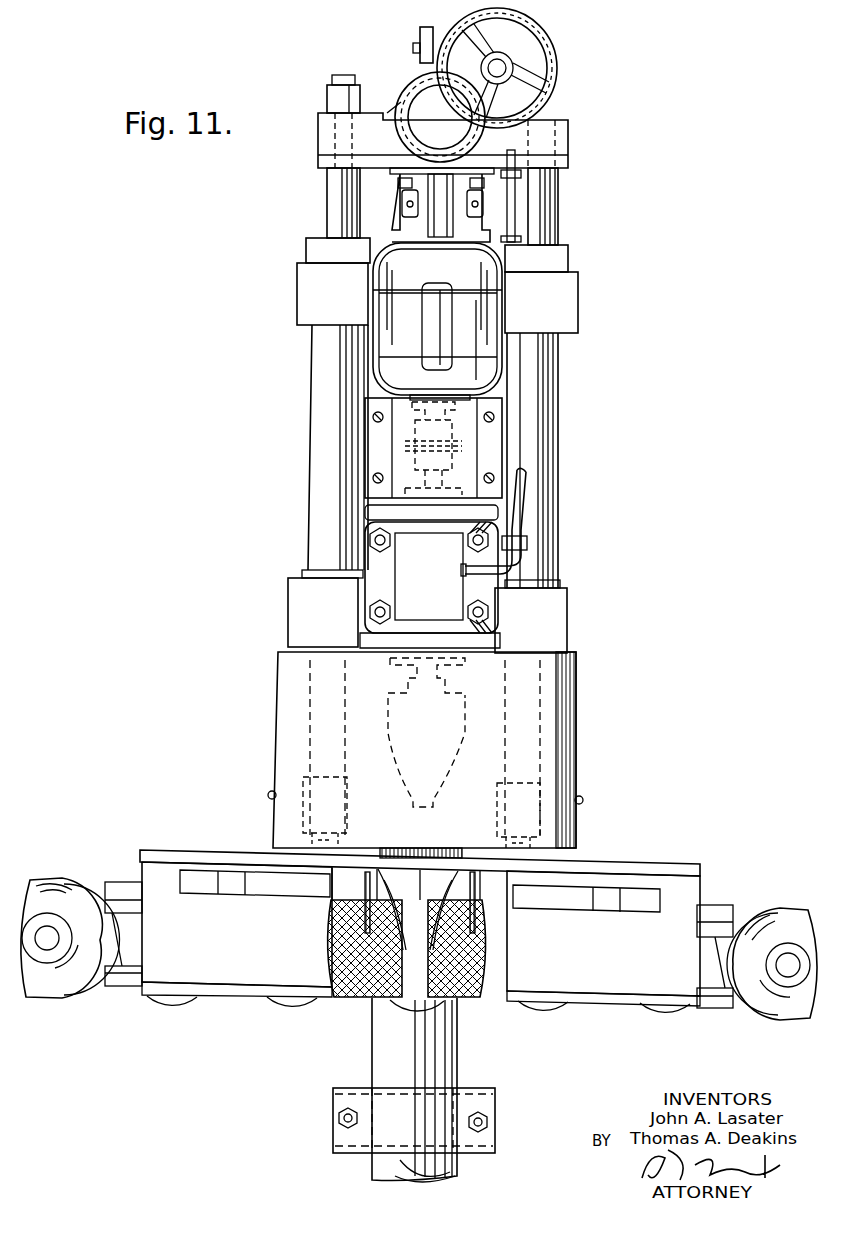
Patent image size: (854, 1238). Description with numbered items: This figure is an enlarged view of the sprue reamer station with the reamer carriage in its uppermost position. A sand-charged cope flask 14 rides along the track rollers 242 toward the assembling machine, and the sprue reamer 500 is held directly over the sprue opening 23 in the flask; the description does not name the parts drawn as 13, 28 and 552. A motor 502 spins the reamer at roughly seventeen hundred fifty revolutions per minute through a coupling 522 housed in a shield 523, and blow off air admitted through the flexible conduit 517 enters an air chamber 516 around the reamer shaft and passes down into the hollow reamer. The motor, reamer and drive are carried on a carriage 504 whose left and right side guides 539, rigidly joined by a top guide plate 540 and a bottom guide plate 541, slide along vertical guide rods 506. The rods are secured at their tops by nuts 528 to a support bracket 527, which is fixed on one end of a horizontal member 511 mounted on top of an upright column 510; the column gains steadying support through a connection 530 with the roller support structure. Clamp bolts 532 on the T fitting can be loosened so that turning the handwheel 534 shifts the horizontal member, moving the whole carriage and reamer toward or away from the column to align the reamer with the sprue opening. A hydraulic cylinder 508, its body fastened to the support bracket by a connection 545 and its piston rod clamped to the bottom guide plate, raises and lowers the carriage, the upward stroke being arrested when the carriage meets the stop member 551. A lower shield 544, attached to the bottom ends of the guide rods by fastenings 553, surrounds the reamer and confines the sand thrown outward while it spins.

The shaft 13 is at (470, 1006).
The cope flask 14 is at (190, 851).
The sprue opening 23 is at (398, 1008).
The carriage frame 28 is at (552, 906).
The track rollers 242 is at (150, 1000).
The sprue reamer 500 is at (450, 750).
The motor 502 is at (437, 321).
The carriage 504 is at (398, 420).
The guide rods 506 is at (327, 200).
The hydraulic cylinder 508 is at (408, 233).
The upright column 510 is at (455, 1170).
The horizontal member 511 is at (414, 82).
The air chamber 516 is at (408, 582).
The flexible conduit 517 is at (527, 492).
The coupling 522 is at (462, 446).
The shield 523 is at (412, 446).
The support bracket 527 is at (570, 151).
The nuts 528 is at (330, 96).
The connection 530 is at (333, 1118).
The clamp bolts 532 is at (417, 44).
The handwheel 534 is at (545, 34).
The side guides 539 is at (312, 386).
The top guide plate 540 is at (297, 283).
The bottom guide plate 541 is at (290, 606).
The lower shield 544 is at (278, 701).
The connection 545 is at (405, 205).
The stop member 551 is at (515, 203).
The left guide block 552 is at (343, 780).
The fastenings 553 is at (578, 803).